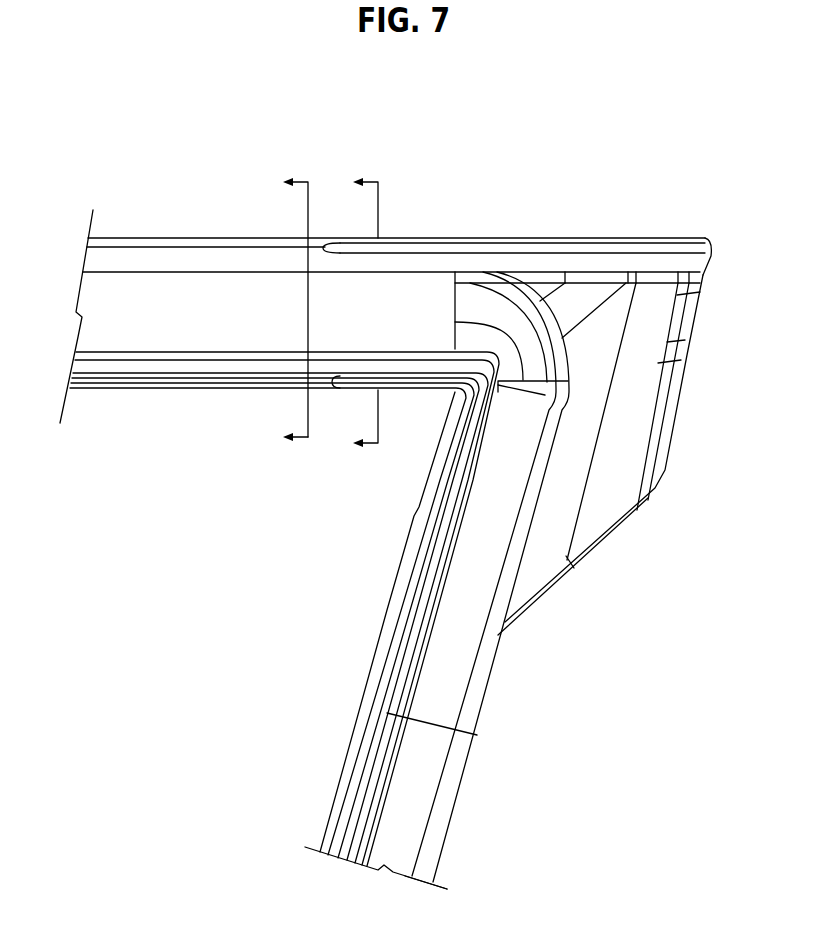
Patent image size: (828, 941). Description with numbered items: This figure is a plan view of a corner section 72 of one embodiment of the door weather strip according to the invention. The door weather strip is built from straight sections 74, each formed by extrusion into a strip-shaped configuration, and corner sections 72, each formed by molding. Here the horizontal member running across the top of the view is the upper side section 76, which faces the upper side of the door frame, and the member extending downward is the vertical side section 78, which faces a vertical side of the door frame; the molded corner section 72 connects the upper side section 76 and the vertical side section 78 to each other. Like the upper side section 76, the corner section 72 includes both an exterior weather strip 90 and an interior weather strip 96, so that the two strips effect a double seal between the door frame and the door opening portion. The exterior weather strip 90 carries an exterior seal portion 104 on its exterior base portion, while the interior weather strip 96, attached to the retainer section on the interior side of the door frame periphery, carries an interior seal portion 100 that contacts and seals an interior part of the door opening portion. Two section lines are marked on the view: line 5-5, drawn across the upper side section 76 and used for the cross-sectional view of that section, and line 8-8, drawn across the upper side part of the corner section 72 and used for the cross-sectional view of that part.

The corner section 72 is at (538, 237).
The straight section 74 is at (217, 239).
The upper side section 76 is at (118, 239).
The vertical side section 78 is at (440, 837).
The exterior weather strip 90 is at (183, 239).
The interior weather strip 96 is at (233, 344).
The interior seal portion 100 is at (127, 346).
The exterior seal portion 104 is at (153, 265).
The line 5- 5 is at (295, 313).
The line 8- 8 is at (364, 314).